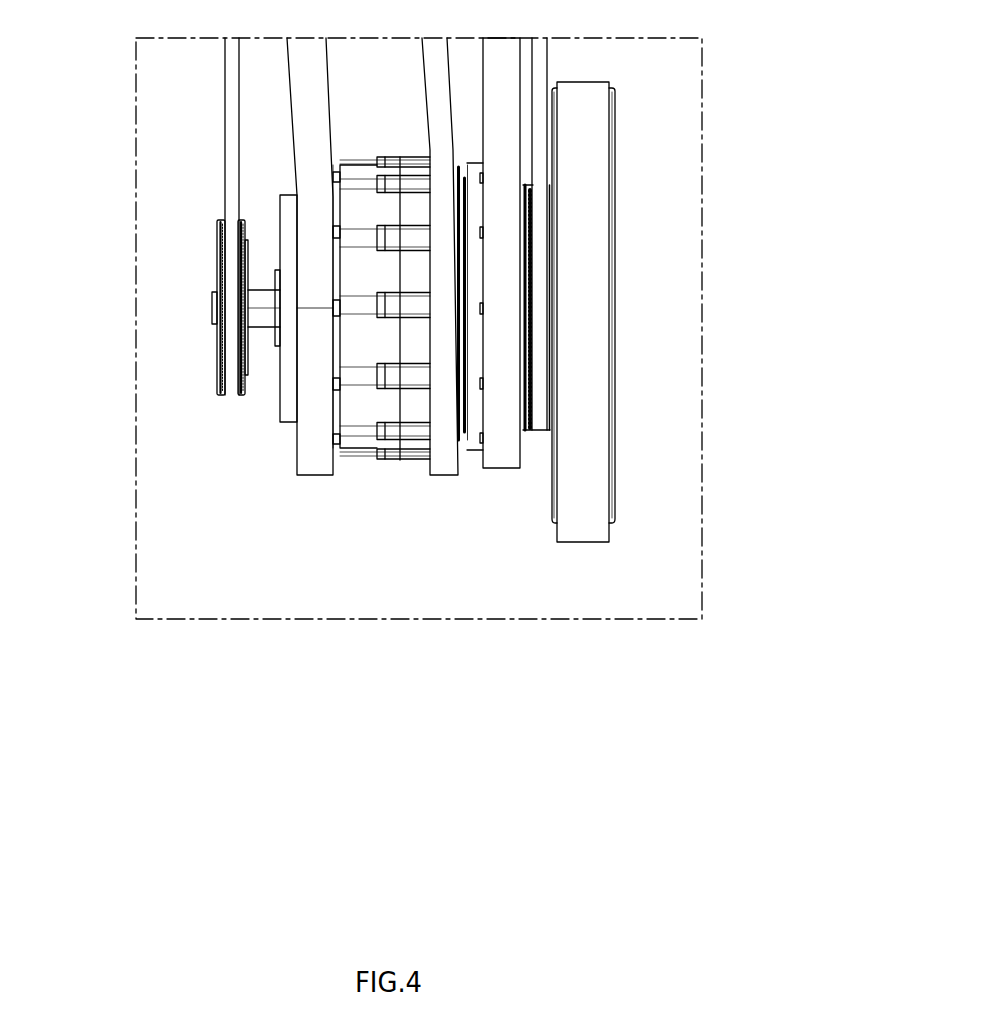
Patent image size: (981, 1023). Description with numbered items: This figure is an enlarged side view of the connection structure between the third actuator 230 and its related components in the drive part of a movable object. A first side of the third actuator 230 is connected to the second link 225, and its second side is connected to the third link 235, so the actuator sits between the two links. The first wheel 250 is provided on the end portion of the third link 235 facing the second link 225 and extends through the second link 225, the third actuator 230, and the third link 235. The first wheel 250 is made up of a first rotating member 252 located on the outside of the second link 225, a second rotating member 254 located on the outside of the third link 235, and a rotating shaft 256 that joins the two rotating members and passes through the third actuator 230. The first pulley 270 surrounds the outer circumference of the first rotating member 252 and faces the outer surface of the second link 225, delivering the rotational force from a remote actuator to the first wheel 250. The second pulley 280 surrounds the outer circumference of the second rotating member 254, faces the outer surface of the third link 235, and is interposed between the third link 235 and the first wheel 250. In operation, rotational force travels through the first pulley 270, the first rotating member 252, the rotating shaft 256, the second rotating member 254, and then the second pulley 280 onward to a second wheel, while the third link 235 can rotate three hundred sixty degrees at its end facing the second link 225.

The second link 225 is at (308, 80).
The first pulley 270 is at (232, 153).
The first rotating member 252 is at (215, 347).
The rotating shaft 256 is at (257, 320).
The second rotating member 254 is at (585, 330).
The first wheel 250 is at (421, 437).
The third actuator 230 is at (400, 422).
The third link 235 is at (497, 113).
The second pulley 280 is at (538, 62).